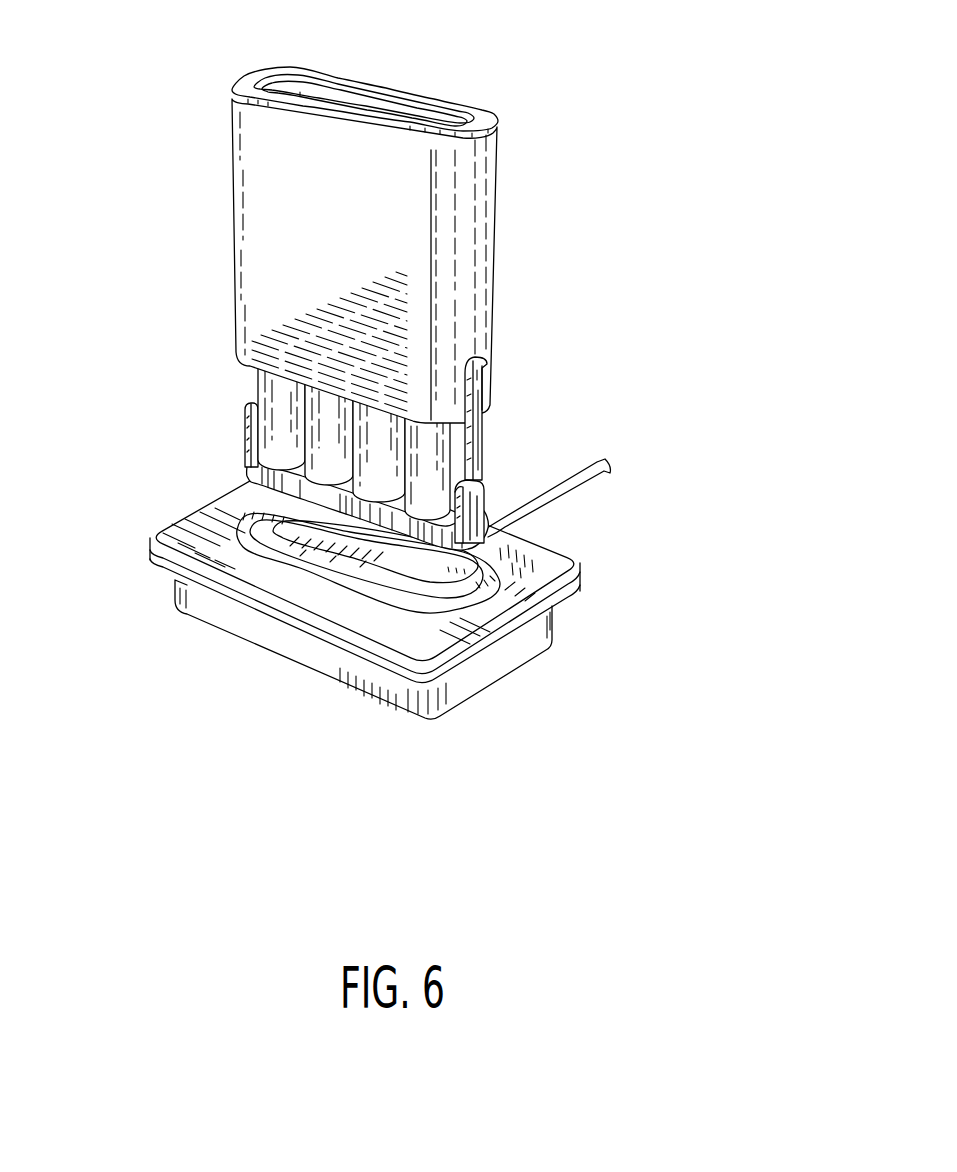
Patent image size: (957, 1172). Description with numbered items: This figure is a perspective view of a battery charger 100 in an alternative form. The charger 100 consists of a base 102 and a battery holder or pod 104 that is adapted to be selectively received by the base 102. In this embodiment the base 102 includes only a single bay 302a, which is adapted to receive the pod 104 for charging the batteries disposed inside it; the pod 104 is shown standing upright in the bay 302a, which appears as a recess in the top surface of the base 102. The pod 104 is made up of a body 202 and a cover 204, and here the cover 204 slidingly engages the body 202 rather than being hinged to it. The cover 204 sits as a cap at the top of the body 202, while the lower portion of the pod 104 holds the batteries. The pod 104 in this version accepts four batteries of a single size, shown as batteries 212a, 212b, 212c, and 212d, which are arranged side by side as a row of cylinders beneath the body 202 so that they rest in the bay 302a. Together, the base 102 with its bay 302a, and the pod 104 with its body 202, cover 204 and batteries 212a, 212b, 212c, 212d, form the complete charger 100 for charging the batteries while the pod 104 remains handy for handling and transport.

The battery charger 100 is at (384, 451).
The base 102 is at (436, 609).
The battery holder or pod 104 is at (338, 451).
The body 202 is at (483, 437).
The cover 204 is at (413, 93).
The battery 212a is at (283, 443).
The battery 212b is at (332, 457).
The battery 212c is at (382, 473).
The battery 212d is at (431, 497).
The first bay 302a is at (443, 590).